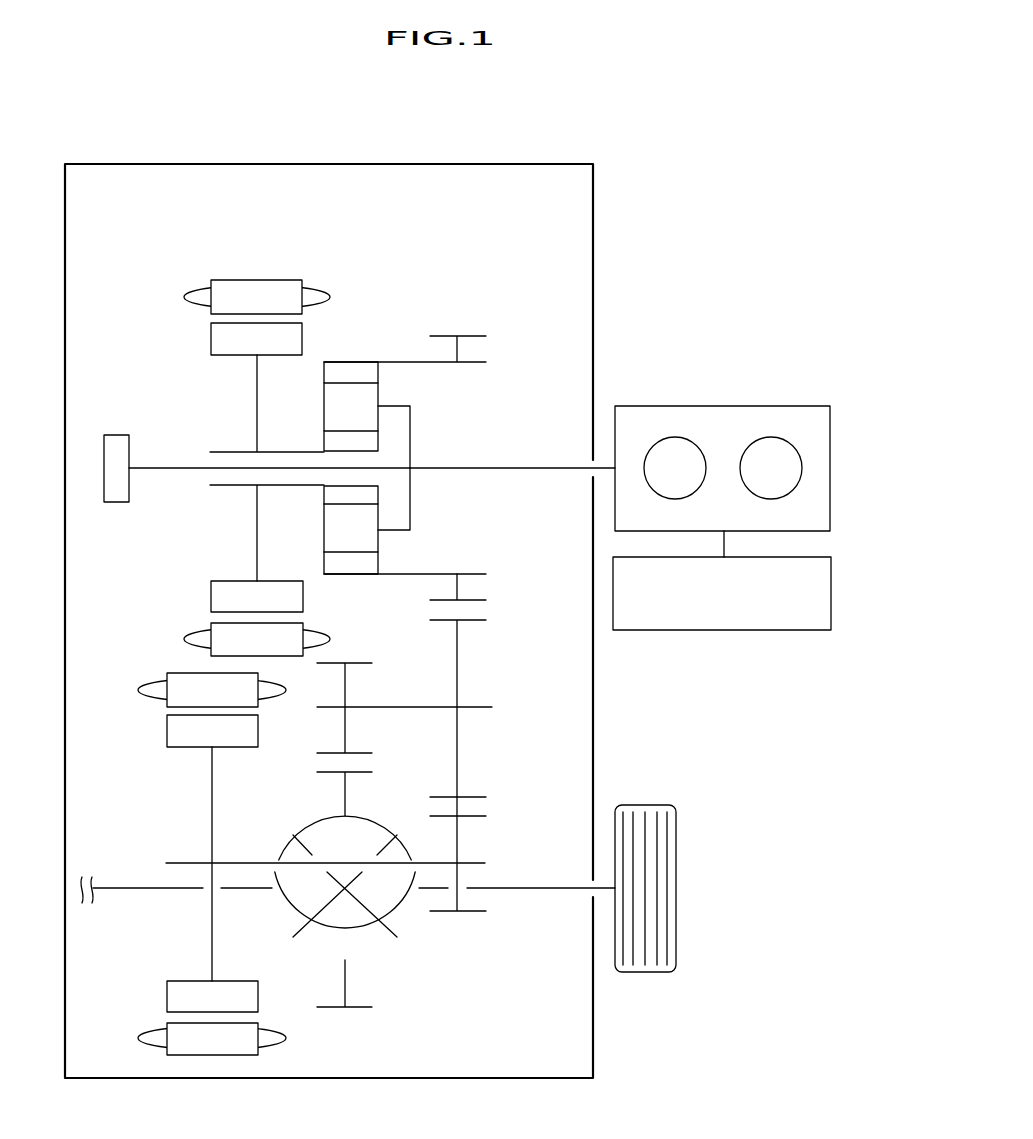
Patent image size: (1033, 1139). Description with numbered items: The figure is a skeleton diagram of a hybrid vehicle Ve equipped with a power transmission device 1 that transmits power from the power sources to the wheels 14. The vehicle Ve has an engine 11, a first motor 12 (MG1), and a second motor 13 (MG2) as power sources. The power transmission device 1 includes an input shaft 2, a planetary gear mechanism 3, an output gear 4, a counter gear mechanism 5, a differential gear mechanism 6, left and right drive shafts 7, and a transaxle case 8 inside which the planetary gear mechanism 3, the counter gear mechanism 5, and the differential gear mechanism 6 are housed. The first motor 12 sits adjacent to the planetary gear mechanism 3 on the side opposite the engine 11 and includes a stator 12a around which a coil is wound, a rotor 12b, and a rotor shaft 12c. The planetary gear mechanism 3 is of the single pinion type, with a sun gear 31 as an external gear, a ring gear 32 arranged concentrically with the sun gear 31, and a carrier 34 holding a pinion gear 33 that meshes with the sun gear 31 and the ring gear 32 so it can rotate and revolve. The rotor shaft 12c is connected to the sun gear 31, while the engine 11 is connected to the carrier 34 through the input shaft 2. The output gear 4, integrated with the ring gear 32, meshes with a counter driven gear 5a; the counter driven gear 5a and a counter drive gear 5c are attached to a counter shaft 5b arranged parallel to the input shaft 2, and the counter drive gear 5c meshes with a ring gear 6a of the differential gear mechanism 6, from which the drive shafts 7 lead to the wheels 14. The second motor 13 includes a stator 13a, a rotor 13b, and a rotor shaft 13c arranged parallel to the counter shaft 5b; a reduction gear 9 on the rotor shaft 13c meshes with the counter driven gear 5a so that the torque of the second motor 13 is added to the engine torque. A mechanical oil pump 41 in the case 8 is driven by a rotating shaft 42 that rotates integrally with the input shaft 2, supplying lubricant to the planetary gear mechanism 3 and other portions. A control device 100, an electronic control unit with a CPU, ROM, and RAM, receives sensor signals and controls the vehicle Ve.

The vehicle Ve is at (716, 146).
The power transmission device 1 is at (632, 284).
The input shaft 2 is at (454, 472).
The planetary gear mechanism 3 is at (380, 403).
The output gear 4 is at (476, 600).
The counter gear mechanism 5 is at (444, 708).
The counter driven gear 5a is at (470, 622).
The counter shaft 5b is at (397, 707).
The counter drive gear 5c is at (360, 753).
The differential gear mechanism 6 is at (403, 987).
The ring gear 6a is at (359, 773).
The drive shaft 7 is at (129, 890).
The transaxle case 8 is at (505, 163).
The reduction gear 9 is at (472, 816).
The engine 11 is at (757, 406).
The first motor 12 is at (232, 419).
The stator 12a is at (230, 280).
The rotor 12b is at (211, 340).
The rotor shaft 12c is at (295, 450).
The second motor 13 is at (287, 838).
The stator 13a is at (172, 673).
The rotor 13b is at (167, 730).
The rotor shaft 13c is at (236, 862).
The wheels 14 is at (643, 972).
The sun gear 31 is at (332, 495).
The ring gear 32 is at (350, 368).
The pinion gear 33 is at (363, 400).
The carrier 34 is at (411, 428).
The mechanical oil pump 41 is at (117, 434).
The rotating shaft 42 is at (153, 472).
The control device 100 is at (762, 630).